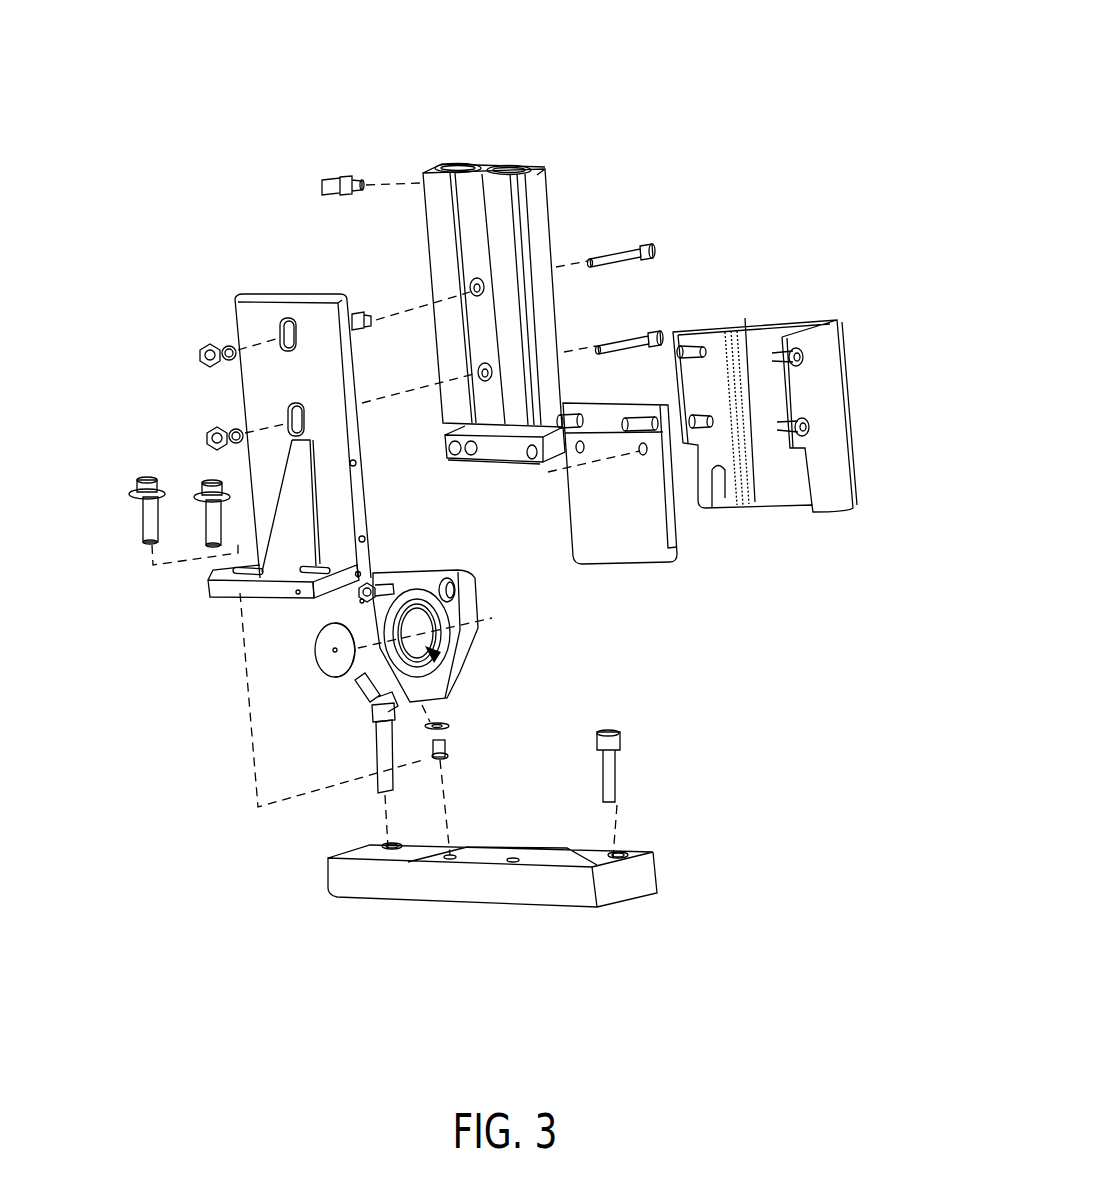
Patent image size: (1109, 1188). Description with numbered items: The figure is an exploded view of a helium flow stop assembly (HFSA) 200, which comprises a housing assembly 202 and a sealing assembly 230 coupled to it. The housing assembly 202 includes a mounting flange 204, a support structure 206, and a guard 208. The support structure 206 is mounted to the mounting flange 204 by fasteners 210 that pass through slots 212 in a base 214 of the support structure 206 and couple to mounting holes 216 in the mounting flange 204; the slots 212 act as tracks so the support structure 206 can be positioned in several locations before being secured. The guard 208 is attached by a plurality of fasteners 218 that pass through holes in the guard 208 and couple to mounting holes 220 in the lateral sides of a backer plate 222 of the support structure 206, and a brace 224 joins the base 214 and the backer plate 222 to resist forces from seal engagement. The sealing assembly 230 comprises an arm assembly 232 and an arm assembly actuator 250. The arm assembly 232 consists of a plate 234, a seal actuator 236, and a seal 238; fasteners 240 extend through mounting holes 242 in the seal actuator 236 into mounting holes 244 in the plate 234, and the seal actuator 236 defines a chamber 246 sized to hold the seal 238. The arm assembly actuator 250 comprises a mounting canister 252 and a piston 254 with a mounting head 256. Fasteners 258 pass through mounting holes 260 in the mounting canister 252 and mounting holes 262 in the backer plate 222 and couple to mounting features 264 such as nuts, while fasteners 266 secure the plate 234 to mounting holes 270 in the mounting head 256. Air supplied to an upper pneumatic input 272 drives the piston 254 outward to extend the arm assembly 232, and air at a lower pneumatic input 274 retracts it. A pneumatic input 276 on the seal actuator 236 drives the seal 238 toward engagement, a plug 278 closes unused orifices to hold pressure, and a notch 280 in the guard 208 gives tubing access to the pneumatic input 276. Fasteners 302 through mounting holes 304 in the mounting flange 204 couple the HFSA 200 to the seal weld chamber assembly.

The helium flow stop assembly 200 is at (772, 80).
The housing assembly 202 is at (752, 235).
The mounting flange 204 is at (640, 885).
The support structure 206 is at (172, 282).
The guard 208 is at (794, 444).
The fasteners 210 is at (210, 532).
The slots 212 is at (205, 578).
The base 214 is at (228, 583).
The mounting holes 216 is at (513, 862).
The fasteners 218 is at (798, 350).
The mounting holes 220 is at (365, 538).
The backer plate 222 is at (256, 317).
The brace 224 is at (282, 515).
The sealing assembly 230 is at (606, 130).
The arm assembly 232 is at (660, 652).
The plate 234 is at (655, 500).
The seal actuator 236 is at (468, 642).
The seal 238 is at (332, 668).
The fasteners 240 is at (362, 601).
The mounting holes 242 is at (377, 584).
The mounting holes 244 is at (646, 455).
The chamber 246 is at (436, 657).
The arm assembly actuator 250 is at (508, 140).
The mounting canister 252 is at (537, 213).
The piston 254 is at (444, 435).
The mounting head 256 is at (490, 462).
The fasteners 258 is at (660, 322).
The mounting holes 260 is at (480, 366).
The mounting holes 262 is at (278, 332).
The mounting features 264 is at (199, 355).
The fasteners 266 is at (633, 418).
The mounting holes 270 is at (450, 450).
The upper pneumatic input 272 is at (322, 178).
The lower pneumatic input 274 is at (353, 313).
The pneumatic input 276 is at (370, 705).
The plug 278 is at (448, 753).
The notch 280 is at (718, 503).
The fasteners 302 is at (625, 780).
The mounting holes 304 is at (390, 849).